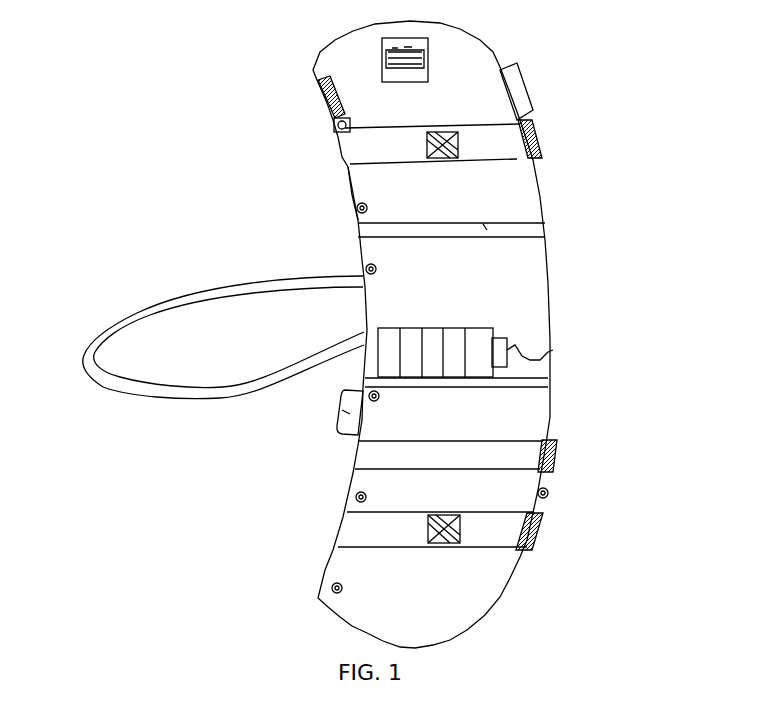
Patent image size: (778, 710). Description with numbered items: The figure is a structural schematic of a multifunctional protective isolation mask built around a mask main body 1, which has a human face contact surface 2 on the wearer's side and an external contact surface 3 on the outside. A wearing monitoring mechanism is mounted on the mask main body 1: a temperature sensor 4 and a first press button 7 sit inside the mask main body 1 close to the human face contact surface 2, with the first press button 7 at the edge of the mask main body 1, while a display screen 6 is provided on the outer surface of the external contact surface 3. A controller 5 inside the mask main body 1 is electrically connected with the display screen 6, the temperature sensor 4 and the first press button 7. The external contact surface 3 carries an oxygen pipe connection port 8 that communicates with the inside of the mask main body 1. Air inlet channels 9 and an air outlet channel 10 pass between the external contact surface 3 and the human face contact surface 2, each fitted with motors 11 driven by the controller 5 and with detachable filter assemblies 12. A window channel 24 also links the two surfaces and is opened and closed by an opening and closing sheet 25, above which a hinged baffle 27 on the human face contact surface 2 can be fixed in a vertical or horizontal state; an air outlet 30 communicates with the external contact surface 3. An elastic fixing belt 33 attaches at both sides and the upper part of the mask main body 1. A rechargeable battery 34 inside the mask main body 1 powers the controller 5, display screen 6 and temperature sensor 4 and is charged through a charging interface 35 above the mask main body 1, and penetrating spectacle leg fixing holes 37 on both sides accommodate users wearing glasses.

The mask main body 1 is at (520, 283).
The human face contact surface 2 is at (352, 195).
The external contact surface 3 is at (551, 417).
The temperature sensor 4 is at (323, 100).
The controller 5 is at (460, 40).
The display screen 6 is at (517, 80).
The first press button 7 is at (370, 268).
The oxygen pipe connection port 8 is at (548, 492).
The air inlet channels 9 is at (358, 147).
The air outlet channel 10 is at (365, 528).
The motors 11 is at (460, 522).
The filter assemblies 12 is at (540, 540).
The window channel 24 is at (373, 456).
The opening and closing sheet 25 is at (557, 455).
The baffle 27 is at (341, 412).
The air outlet 30 is at (520, 382).
The elastic fixing belt 33 is at (217, 294).
The rechargeable battery 34 is at (450, 336).
The charging interface 35 is at (553, 350).
The spectacle leg fixing holes 37 is at (485, 226).